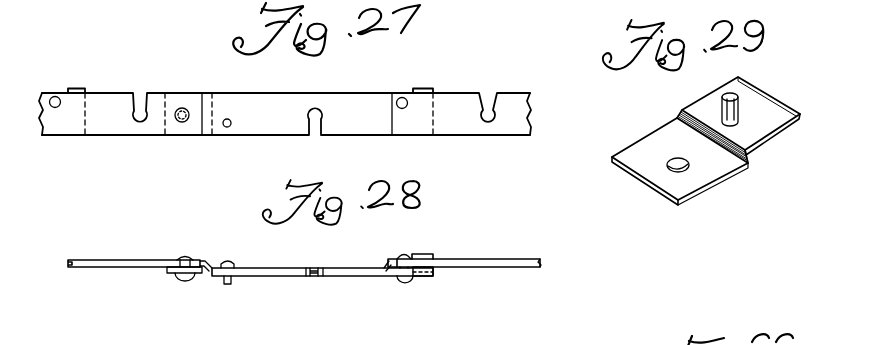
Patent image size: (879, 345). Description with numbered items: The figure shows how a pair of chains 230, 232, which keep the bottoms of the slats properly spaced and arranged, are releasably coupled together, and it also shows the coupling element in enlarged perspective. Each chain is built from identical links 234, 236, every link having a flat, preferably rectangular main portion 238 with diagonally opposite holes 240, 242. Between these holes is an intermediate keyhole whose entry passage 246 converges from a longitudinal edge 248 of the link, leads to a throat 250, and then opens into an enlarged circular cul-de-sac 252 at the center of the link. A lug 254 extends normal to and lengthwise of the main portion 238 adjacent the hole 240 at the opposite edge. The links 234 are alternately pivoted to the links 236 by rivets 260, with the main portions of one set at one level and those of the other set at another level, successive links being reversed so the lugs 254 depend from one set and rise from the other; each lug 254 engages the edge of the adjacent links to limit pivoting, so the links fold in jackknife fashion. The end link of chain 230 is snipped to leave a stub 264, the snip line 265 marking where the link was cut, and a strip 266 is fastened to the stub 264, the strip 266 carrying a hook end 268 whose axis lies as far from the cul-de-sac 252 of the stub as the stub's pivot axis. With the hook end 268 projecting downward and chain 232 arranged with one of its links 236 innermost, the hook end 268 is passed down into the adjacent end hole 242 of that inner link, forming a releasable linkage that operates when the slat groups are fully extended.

In FIG. 27, the chain 230 is at (86, 139).
In FIG. 28, the chain 230 is at (99, 272).
In FIG. 27, the chain 232 is at (300, 137).
In FIG. 28, the chain 232 is at (260, 280).
In FIG. 27, the link 234 is at (363, 140).
In FIG. 28, the link 234 is at (356, 280).
In FIG. 27, the link 236 is at (504, 139).
In FIG. 28, the link 236 is at (521, 256).
In FIG. 27, the main portion 238 is at (105, 100).
In FIG. 28, the hole 240 is at (418, 279).
In FIG. 28, the hole 242 is at (249, 264).
In FIG. 27, the entry passage 246 is at (323, 125).
In FIG. 27, the longitudinal edge 248 is at (100, 92).
In FIG. 27, the throat 250 is at (308, 116).
In FIG. 27, the cul-de-sac 252 is at (139, 126).
In FIG. 28, the cul-de-sac 252 is at (126, 259).
In FIG. 27, the lug 254 is at (424, 89).
In FIG. 28, the lug 254 is at (423, 256).
In FIG. 27, the rivet 260 is at (59, 108).
In FIG. 28, the rivet 260 is at (404, 253).
In FIG. 27, the stub 264 is at (183, 70).
In FIG. 28, the stub 264 is at (212, 267).
In FIG. 29, the stub 264 is at (690, 185).
In FIG. 27, the fold line 265 is at (244, 70).
In FIG. 27, the strip 266 is at (180, 123).
In FIG. 28, the strip 266 is at (187, 278).
In FIG. 27, the hook end 268 is at (225, 128).
In FIG. 28, the hook end 268 is at (227, 286).
In FIG. 29, the hook end 268 is at (739, 108).